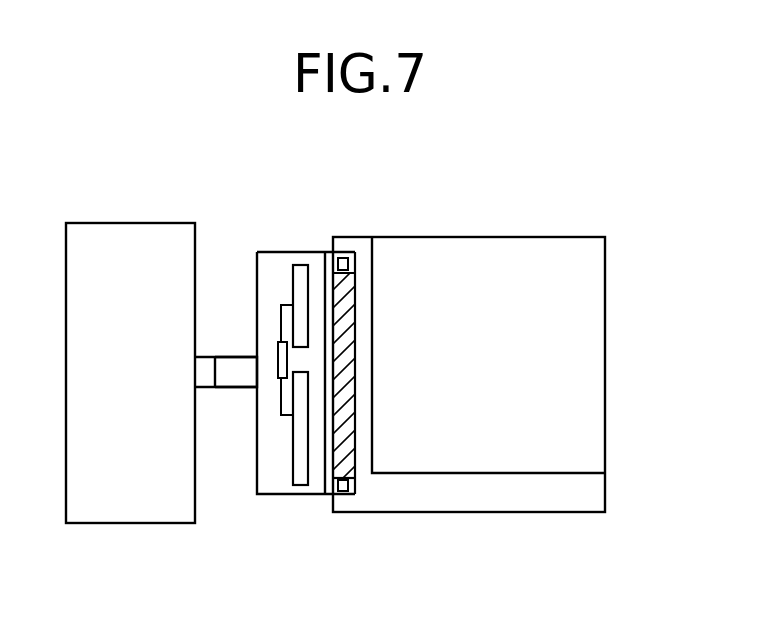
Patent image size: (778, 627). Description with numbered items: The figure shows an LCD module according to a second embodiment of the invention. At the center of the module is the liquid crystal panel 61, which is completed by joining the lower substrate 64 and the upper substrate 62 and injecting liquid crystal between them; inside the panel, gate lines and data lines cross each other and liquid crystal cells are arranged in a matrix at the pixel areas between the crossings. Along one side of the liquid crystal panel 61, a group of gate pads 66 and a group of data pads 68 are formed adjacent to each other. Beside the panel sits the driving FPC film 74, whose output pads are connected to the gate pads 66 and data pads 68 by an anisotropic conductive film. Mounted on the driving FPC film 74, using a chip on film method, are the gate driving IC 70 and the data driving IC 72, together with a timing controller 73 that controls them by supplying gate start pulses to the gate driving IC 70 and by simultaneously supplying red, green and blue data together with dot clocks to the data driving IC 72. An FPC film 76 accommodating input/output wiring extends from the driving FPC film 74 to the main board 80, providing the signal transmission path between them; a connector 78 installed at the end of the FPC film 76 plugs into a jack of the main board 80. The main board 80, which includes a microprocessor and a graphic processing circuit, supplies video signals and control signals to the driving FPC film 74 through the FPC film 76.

The liquid crystal panel 61 is at (635, 404).
The upper substrate 62 is at (578, 478).
The lower substrate 64 is at (567, 512).
The gate pads 66 is at (349, 273).
The data pads 68 is at (346, 470).
The gate driving IC 70 is at (299, 265).
The data driving IC 72 is at (300, 490).
The timing controller 73 is at (280, 347).
The driving FPC film 74 is at (270, 496).
The FPC film 76 is at (234, 390).
The connector 78 is at (204, 390).
The main board 80 is at (126, 497).